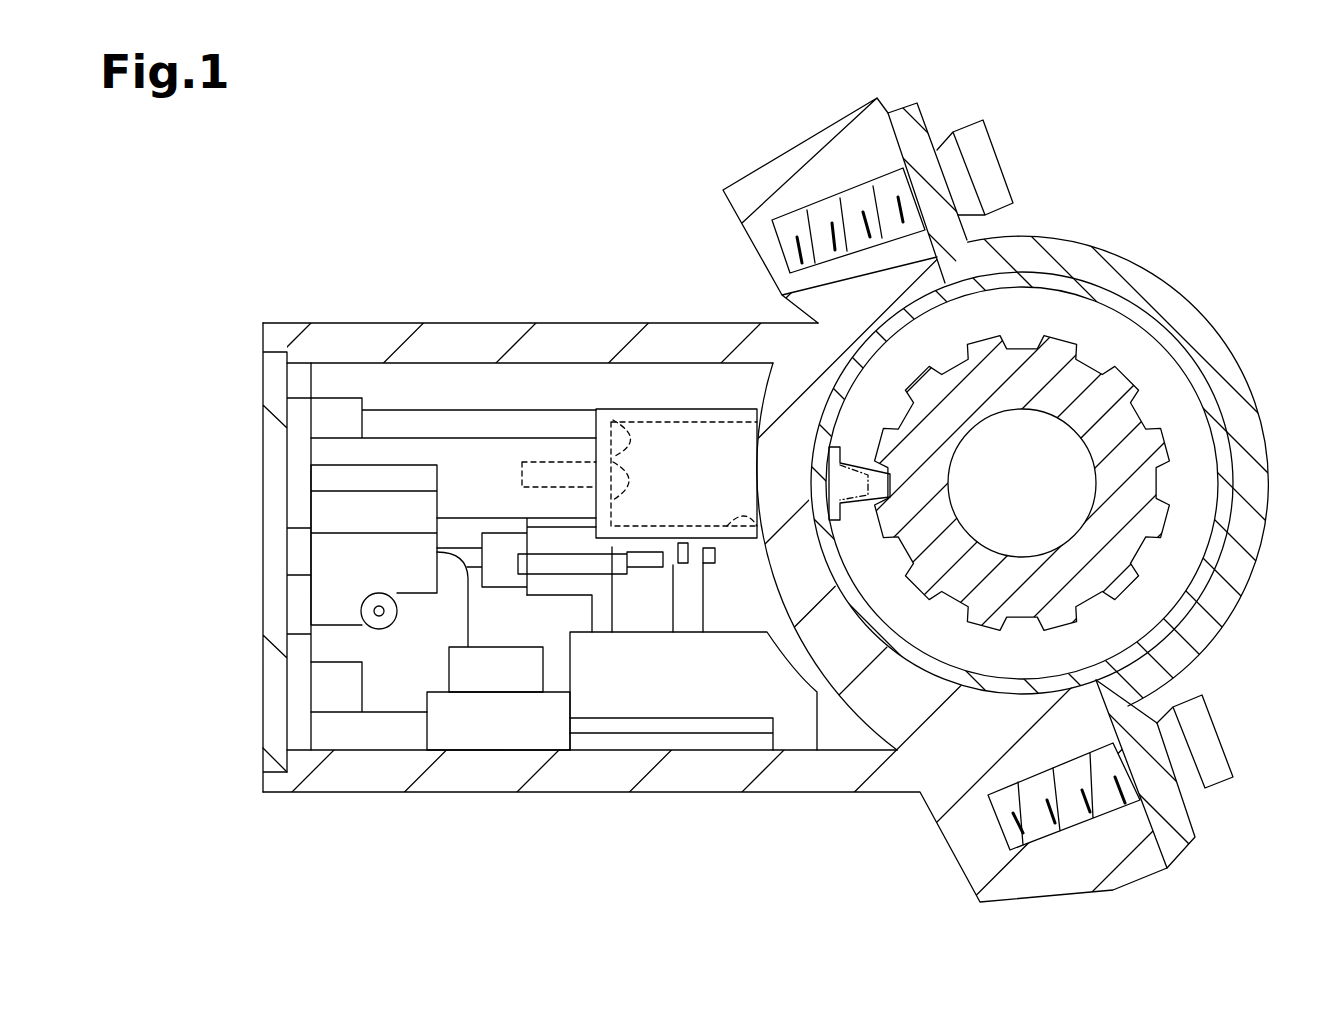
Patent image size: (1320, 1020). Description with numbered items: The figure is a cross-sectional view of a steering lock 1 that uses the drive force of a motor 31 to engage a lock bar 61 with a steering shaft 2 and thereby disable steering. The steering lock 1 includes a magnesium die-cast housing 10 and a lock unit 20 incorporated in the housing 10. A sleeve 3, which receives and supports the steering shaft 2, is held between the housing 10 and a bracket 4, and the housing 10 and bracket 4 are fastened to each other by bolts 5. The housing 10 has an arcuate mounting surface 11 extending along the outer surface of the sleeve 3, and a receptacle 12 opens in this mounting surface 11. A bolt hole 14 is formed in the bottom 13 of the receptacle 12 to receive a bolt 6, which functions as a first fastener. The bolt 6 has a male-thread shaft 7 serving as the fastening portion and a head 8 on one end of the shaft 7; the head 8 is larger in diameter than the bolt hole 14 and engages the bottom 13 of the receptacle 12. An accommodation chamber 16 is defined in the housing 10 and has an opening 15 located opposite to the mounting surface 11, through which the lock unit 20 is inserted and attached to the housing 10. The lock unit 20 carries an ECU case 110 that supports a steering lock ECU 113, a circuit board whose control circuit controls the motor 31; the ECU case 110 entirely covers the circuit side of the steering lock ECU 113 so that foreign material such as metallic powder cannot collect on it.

The steering lock 1 is at (1182, 216).
The steering shaft 2 is at (1100, 525).
The sleeve 3 is at (1235, 462).
The bracket 4 is at (1240, 585).
The bolts 5 is at (1003, 172).
The bolt 6 is at (636, 445).
The male-thread shaft 7 is at (522, 462).
The head 8 is at (648, 409).
The housing 10 is at (752, 174).
The mounting surface 11 is at (840, 415).
The receptacle 12 is at (745, 538).
The bottom 13 is at (620, 422).
The bolt hole 14 is at (636, 484).
The opening 15 is at (262, 753).
The accommodation chamber 16 is at (612, 366).
The lock unit 20 is at (250, 383).
The motor 31 is at (460, 623).
The lock bar 61 is at (876, 508).
The ECU case 110 is at (818, 728).
The steering lock ECU 113 is at (642, 752).